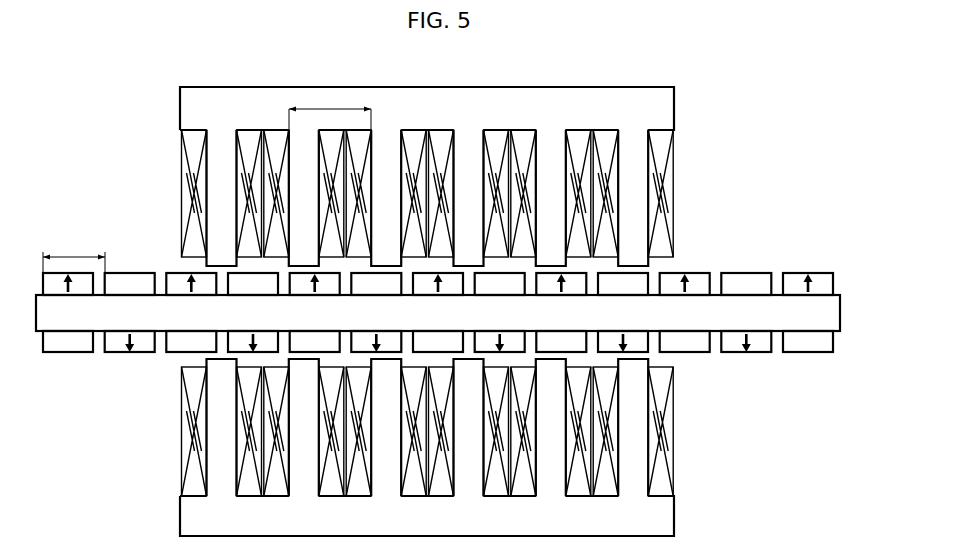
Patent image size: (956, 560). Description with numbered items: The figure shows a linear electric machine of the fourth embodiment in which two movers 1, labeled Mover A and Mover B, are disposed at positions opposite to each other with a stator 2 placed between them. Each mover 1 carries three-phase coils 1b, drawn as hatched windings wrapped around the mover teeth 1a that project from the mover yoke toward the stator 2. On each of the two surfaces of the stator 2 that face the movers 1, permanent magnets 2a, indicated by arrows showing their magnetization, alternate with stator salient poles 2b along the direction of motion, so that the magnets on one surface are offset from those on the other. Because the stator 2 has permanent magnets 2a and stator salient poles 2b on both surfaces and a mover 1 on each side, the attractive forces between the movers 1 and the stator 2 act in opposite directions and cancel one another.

The mover 1 is at (403, 311).
The mover tooth 1a is at (633, 431).
The three-phase coils 1b is at (193, 432).
The stator 2 is at (438, 306).
The permanent magnets 2a is at (698, 283).
The stator salient poles 2b is at (760, 283).